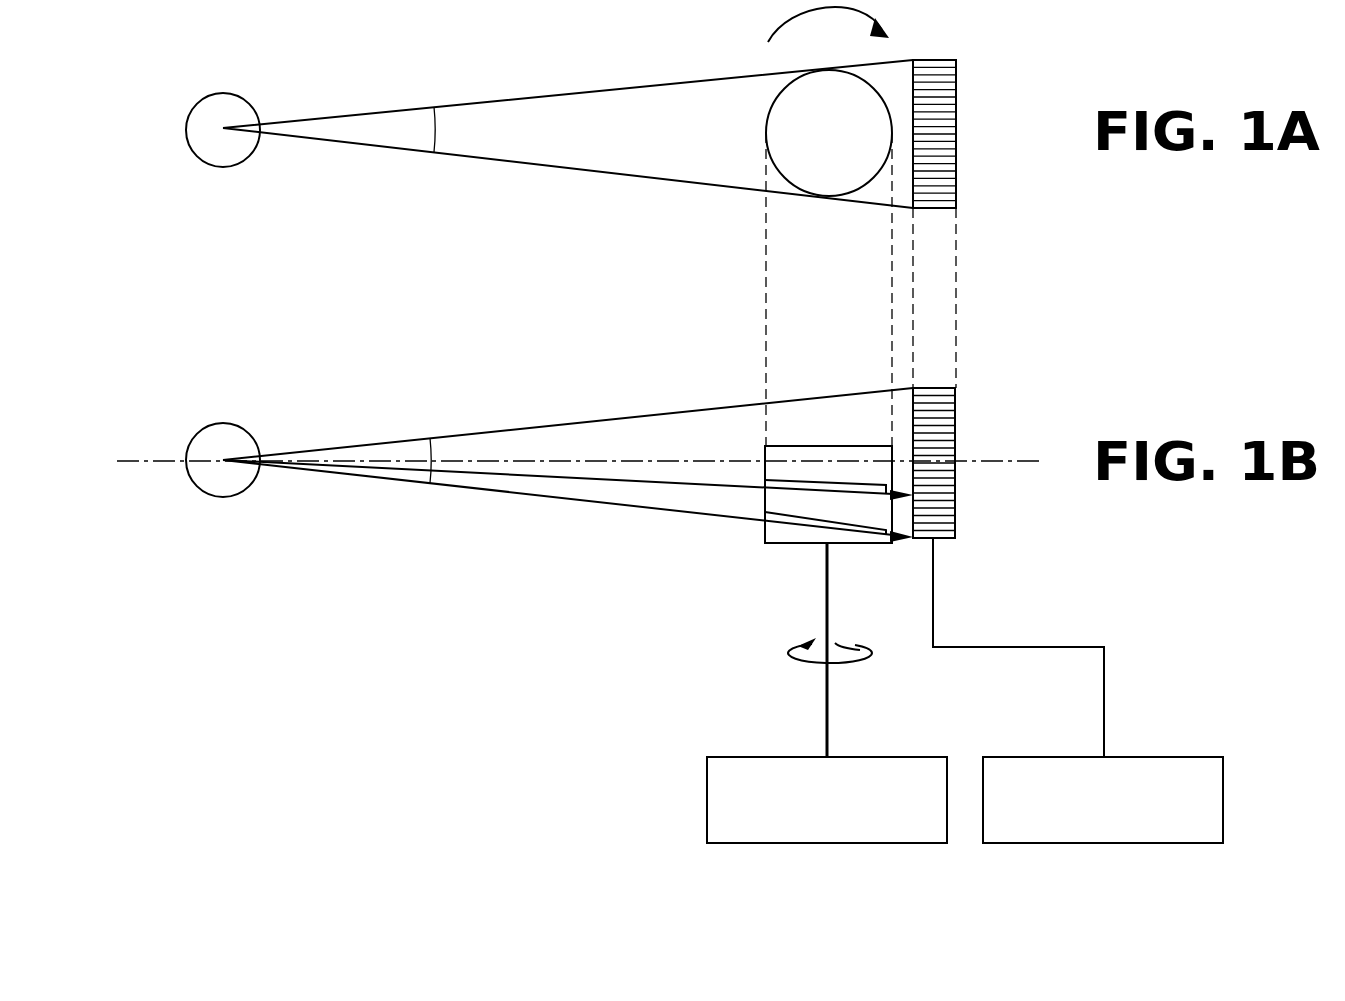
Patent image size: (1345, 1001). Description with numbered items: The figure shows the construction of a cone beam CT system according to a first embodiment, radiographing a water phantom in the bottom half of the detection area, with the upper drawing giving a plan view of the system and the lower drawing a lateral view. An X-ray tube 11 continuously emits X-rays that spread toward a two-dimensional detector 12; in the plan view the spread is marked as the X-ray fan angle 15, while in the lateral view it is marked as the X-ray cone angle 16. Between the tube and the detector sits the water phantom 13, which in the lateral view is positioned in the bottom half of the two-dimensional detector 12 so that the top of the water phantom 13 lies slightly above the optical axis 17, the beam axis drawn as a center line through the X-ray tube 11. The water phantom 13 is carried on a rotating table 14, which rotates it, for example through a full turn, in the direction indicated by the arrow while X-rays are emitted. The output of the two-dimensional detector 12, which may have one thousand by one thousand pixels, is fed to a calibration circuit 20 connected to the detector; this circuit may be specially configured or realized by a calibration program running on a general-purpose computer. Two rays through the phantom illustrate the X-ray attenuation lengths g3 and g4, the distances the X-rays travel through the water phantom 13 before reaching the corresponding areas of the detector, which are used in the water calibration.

In FIG. 1A, the X-ray tube 11 is at (224, 93).
In FIG. 1B, the X-ray tube 11 is at (224, 423).
In FIG. 1A, the two-dimensional detector 12 is at (958, 89).
In FIG. 1B, the two-dimensional detector 12 is at (957, 420).
In FIG. 1A, the water phantom 13 is at (766, 120).
In FIG. 1B, the water phantom 13 is at (795, 446).
In FIG. 1B, the rotating table 14 is at (825, 843).
In FIG. 1A, the X-ray fan angle 15 is at (436, 112).
In FIG. 1B, the X-ray cone angle 16 is at (434, 442).
In FIG. 1B, the optical axis 17 is at (1000, 464).
In FIG. 1B, the calibration circuit 20 is at (1103, 843).
In FIG. 1B, the X-ray attenuation length g3 is at (824, 482).
In FIG. 1B, the X-ray attenuation length g4 is at (826, 513).